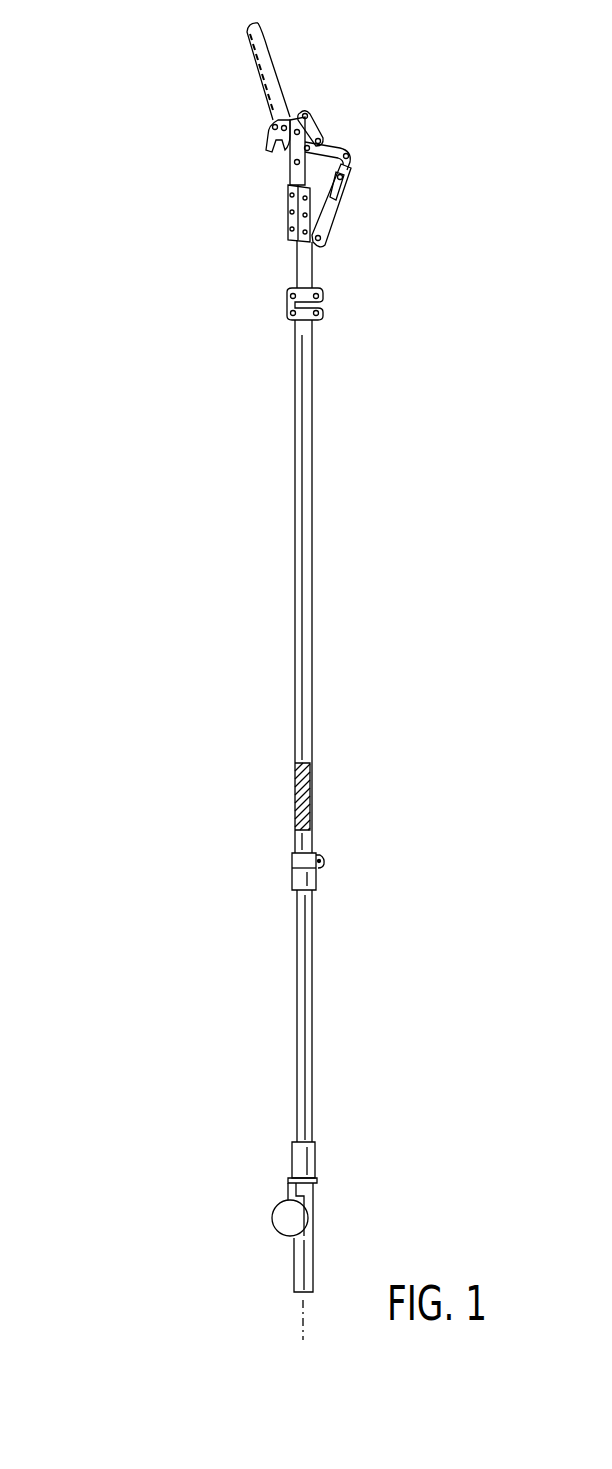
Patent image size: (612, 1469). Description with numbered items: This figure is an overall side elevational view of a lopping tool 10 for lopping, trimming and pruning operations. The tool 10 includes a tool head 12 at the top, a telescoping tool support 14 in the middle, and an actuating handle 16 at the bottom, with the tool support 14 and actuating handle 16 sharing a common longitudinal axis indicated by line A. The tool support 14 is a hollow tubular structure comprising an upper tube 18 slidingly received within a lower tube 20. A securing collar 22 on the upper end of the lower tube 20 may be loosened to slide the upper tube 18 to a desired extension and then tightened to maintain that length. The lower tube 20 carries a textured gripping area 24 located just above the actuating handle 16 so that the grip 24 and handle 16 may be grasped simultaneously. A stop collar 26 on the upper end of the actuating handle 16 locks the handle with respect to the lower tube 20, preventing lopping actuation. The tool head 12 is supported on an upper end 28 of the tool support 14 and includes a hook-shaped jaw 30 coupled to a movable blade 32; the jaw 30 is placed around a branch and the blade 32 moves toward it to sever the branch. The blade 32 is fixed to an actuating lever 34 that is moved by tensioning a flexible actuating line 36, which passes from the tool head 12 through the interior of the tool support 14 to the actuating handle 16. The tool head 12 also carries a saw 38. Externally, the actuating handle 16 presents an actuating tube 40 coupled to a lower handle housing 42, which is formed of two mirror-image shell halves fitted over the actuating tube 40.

The tool 10 is at (178, 895).
The tool head 12 is at (215, 143).
The telescoping tool support 14 is at (295, 766).
The actuating handle 16 is at (233, 1160).
The upper tube 18 is at (297, 265).
The lower tube 20 is at (295, 588).
The securing collar 22 is at (287, 305).
The gripping area 24 is at (295, 800).
The stop collar 26 is at (292, 860).
The upper end 28 is at (302, 222).
The hook-shaped jaw 30 is at (273, 135).
The movable blade 32 is at (302, 141).
The actuating lever 34 is at (335, 148).
The flexible actuating line 36 is at (337, 203).
The saw 38 is at (275, 67).
The actuating tube 40 is at (300, 1013).
The handle housing 42 is at (293, 1188).